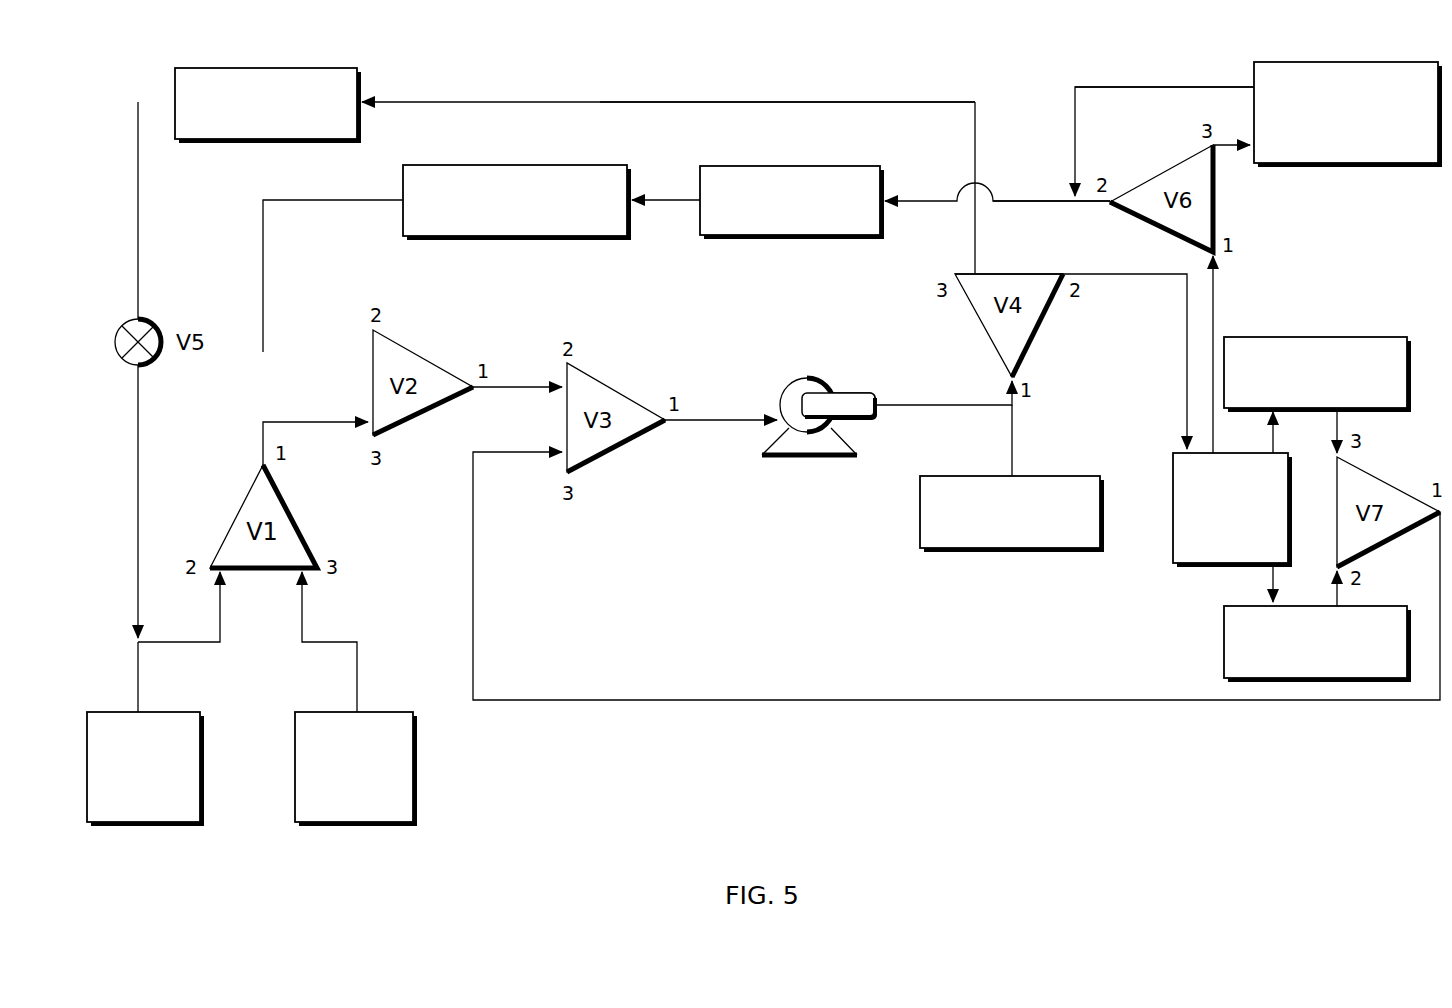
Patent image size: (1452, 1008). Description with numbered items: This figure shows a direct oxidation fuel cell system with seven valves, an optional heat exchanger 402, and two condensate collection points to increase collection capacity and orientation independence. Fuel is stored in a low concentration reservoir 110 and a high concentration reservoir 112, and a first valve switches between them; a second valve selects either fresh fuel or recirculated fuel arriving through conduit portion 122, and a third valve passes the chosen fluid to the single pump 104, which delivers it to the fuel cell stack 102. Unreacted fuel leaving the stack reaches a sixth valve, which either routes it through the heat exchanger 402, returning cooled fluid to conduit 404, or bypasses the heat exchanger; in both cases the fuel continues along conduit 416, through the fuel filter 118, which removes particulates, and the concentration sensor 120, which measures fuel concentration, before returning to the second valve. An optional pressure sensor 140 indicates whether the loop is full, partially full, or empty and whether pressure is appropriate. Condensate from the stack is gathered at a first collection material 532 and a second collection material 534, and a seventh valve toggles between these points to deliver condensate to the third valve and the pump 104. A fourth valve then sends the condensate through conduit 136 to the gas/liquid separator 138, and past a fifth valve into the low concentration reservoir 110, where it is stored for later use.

The gas/liquid separator 138 is at (290, 68).
The concentration sensor 120 is at (562, 165).
The fuel filter 118 is at (815, 166).
The conduit 136 is at (905, 102).
The conduit 404 is at (1135, 87).
The recirculation loop conduit 416 is at (1058, 200).
The heat exchanger 402 is at (1348, 167).
The conduit portion 122 is at (263, 270).
The pump 104 is at (818, 370).
The pressure sensor 140 is at (920, 514).
The fuel cell stack 102 is at (1173, 474).
The second collection material 534 is at (1348, 337).
The first collection material 532 is at (1224, 632).
The low concentration reservoir 110 is at (147, 826).
The high concentration reservoir 112 is at (353, 826).